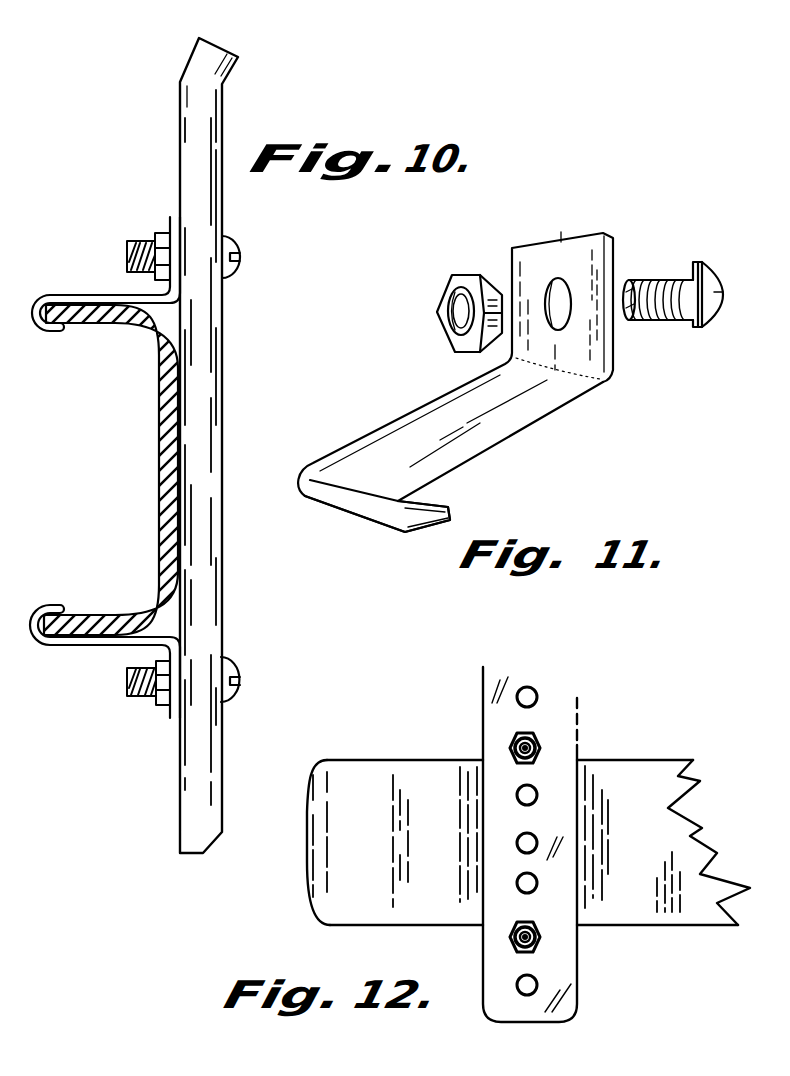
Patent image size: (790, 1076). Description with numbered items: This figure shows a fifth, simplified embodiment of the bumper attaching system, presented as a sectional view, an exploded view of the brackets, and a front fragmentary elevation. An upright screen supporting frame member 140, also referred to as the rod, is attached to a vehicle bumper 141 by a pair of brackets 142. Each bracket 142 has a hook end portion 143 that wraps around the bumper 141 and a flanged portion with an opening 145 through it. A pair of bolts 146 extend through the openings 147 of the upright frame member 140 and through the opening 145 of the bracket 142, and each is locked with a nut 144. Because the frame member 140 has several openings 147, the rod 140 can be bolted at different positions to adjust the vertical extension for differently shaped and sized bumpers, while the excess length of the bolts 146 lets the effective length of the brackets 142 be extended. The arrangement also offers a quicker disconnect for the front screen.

In FIG. 10, the upright screen supporting frame member 140 is at (180, 147).
In FIG. 12, the upright screen supporting frame member 140 is at (567, 750).
In FIG. 10, the vehicle bumper 141 is at (140, 328).
In FIG. 12, the vehicle bumper 141 is at (640, 905).
In FIG. 10, the bracket 142 is at (92, 294).
In FIG. 11, the bracket 142 is at (452, 456).
In FIG. 10, the hook end portion 143 is at (38, 605).
In FIG. 11, the hook end portion 143 is at (405, 533).
In FIG. 10, the nut 144 is at (163, 705).
In FIG. 11, the nut 144 is at (437, 318).
In FIG. 11, the opening 145 is at (563, 283).
In FIG. 10, the bolt 146 is at (238, 662).
In FIG. 11, the bolt 146 is at (692, 322).
In FIG. 12, the openings of the upright frame member 147 is at (533, 692).